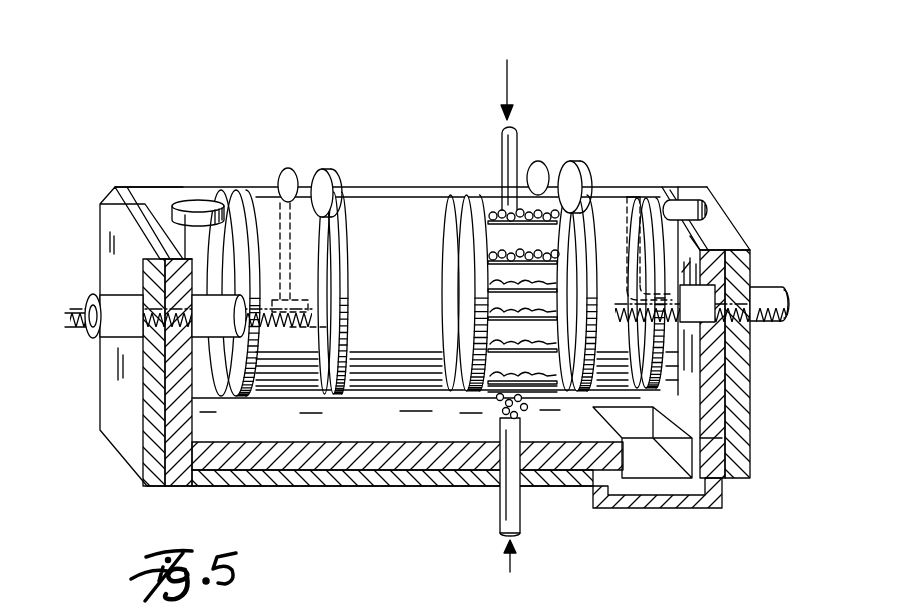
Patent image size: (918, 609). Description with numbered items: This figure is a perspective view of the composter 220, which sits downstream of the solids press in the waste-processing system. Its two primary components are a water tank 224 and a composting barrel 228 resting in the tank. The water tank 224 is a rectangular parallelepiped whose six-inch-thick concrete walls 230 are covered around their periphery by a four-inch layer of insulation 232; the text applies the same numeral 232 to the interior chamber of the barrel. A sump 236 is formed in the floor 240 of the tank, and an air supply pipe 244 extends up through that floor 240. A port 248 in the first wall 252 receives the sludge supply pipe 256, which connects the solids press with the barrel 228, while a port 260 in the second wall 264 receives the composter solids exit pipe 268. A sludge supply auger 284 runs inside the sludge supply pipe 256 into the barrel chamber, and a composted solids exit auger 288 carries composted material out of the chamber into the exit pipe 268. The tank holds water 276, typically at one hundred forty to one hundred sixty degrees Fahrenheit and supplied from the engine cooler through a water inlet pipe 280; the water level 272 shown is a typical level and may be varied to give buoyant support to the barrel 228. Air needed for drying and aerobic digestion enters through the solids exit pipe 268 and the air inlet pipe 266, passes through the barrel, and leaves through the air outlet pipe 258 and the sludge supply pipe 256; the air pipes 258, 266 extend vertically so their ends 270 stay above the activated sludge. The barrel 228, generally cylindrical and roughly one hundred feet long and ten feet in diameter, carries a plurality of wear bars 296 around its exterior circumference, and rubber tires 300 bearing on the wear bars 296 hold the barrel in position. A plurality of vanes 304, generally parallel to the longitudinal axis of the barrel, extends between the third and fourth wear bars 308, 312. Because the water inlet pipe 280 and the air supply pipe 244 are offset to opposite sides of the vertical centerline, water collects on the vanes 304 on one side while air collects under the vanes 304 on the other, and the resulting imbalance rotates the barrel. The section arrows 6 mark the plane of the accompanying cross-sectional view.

The composter 220 is at (136, 93).
The water tank 224 is at (182, 458).
The composting barrel 228 is at (433, 311).
The walls 230 is at (713, 387).
The layer of insulation 232 is at (405, 222).
The sump 236 is at (660, 462).
The floor 240 is at (352, 423).
The air supply pipe 244 is at (520, 513).
The port 248 is at (137, 290).
The first wall 252 is at (100, 224).
The sludge supply pipe 256 is at (117, 337).
The air outlet pipe 258 is at (272, 196).
The port 260 is at (748, 283).
The second wall 264 is at (705, 224).
The air inlet pipe 266 is at (675, 192).
The composter solids exit pipe 268 is at (772, 322).
The ends 270 is at (323, 234).
The water level 272 is at (682, 268).
The water 276 is at (297, 436).
The water inlet pipe 280 is at (513, 135).
The sludge supply auger 284 is at (84, 322).
The composted solids exit auger 288 is at (782, 307).
The wear bars 296 is at (232, 192).
The rubber tires 300 is at (195, 203).
The vanes 304 is at (505, 212).
The third wear bar 308 is at (477, 276).
The fourth wear bar 312 is at (588, 327).
The section line 6- 6 is at (490, 58).